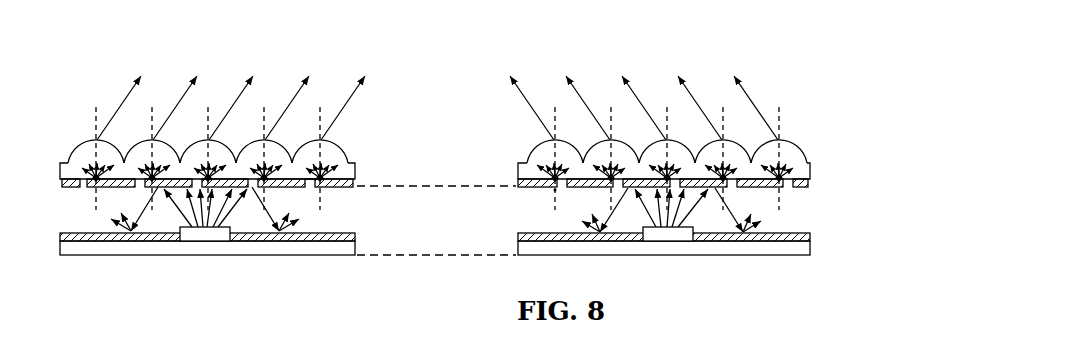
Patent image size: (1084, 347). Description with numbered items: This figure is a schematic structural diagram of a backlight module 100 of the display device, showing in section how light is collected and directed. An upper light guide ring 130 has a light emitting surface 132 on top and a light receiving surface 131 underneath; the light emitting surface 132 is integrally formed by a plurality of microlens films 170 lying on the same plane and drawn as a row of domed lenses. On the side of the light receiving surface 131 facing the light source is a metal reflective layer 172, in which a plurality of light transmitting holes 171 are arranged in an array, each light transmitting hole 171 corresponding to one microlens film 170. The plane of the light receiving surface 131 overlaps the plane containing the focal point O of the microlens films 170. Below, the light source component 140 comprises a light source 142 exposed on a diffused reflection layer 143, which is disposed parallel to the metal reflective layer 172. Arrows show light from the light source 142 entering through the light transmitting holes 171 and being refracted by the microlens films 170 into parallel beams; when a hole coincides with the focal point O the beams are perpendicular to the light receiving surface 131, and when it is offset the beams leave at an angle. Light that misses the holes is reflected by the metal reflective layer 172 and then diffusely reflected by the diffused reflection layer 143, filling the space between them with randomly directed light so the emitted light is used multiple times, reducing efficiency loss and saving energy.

The backlight module 100 is at (146, 72).
The light guide ring 130 is at (443, 128).
The light receiving surface 131 is at (353, 179).
The light emitting surface 132 is at (342, 152).
The light transmitting hole 171 is at (311, 189).
The light source component 140 is at (893, 215).
The light source 142 is at (805, 249).
The diffused reflection layer 143 is at (800, 235).
The microlens film 170 is at (797, 150).
The metal reflective layer 172 is at (809, 184).
The focal point O is at (553, 198).